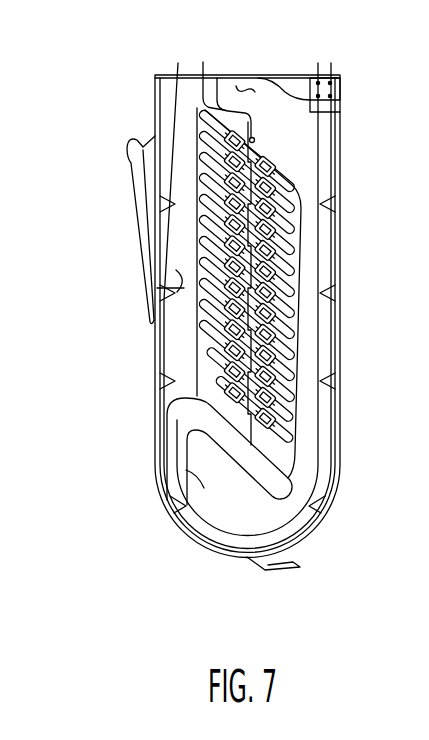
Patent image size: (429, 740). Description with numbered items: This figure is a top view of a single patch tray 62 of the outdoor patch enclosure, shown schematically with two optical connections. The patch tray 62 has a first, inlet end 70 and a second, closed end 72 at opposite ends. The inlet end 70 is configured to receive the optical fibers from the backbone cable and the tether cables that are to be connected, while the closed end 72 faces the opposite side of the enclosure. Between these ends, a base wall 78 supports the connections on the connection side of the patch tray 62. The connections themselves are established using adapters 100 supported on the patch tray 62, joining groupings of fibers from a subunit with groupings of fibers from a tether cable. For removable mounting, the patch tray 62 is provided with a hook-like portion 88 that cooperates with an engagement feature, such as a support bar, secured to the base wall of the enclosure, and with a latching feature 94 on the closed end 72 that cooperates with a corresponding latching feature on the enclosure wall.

The patch tray 62 is at (362, 143).
The inlet end 70 is at (273, 74).
The closed end 72 is at (317, 527).
The base wall 78 is at (243, 88).
The hook-like portion 88 is at (142, 146).
The latching feature 94 is at (267, 572).
The adapter 100 is at (217, 370).